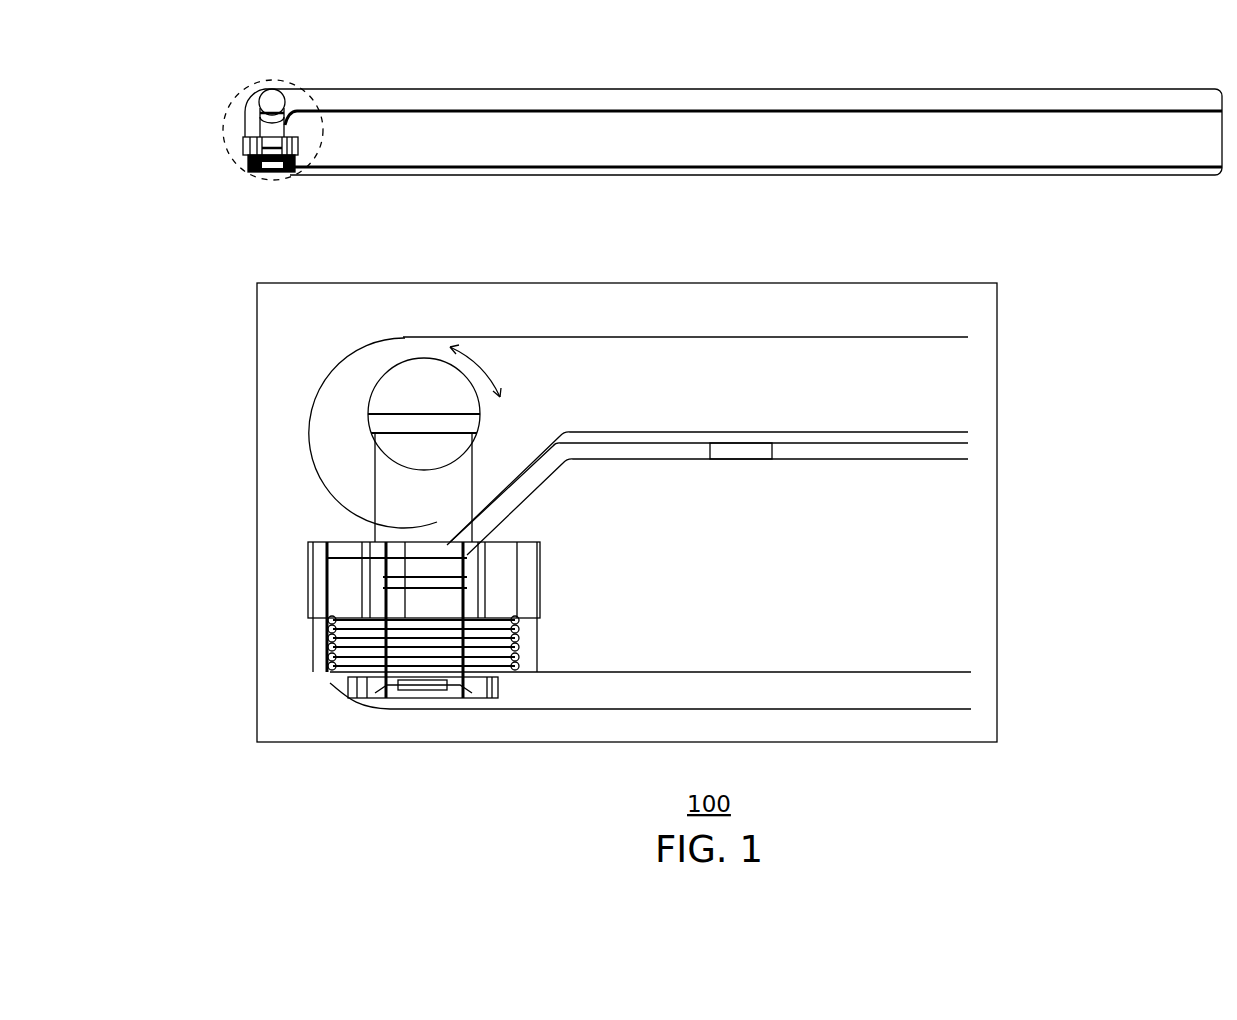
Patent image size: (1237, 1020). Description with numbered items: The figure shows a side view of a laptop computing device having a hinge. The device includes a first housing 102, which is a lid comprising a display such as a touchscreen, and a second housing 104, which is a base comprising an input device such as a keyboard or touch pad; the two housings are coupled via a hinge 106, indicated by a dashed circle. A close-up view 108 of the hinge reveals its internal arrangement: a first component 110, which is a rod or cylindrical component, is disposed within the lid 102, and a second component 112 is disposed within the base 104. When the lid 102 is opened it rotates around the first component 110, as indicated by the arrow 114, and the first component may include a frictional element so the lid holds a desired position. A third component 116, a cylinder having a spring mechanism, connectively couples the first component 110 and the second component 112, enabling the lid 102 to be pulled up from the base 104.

The first housing 102 is at (582, 337).
The second housing 104 is at (951, 497).
The hinge 106 is at (240, 103).
The close-up view of the hinge 108 is at (997, 490).
The first component 110 is at (372, 393).
The second component 112 is at (330, 683).
The rotation of the lid 114 is at (403, 338).
The third component 116 is at (377, 527).